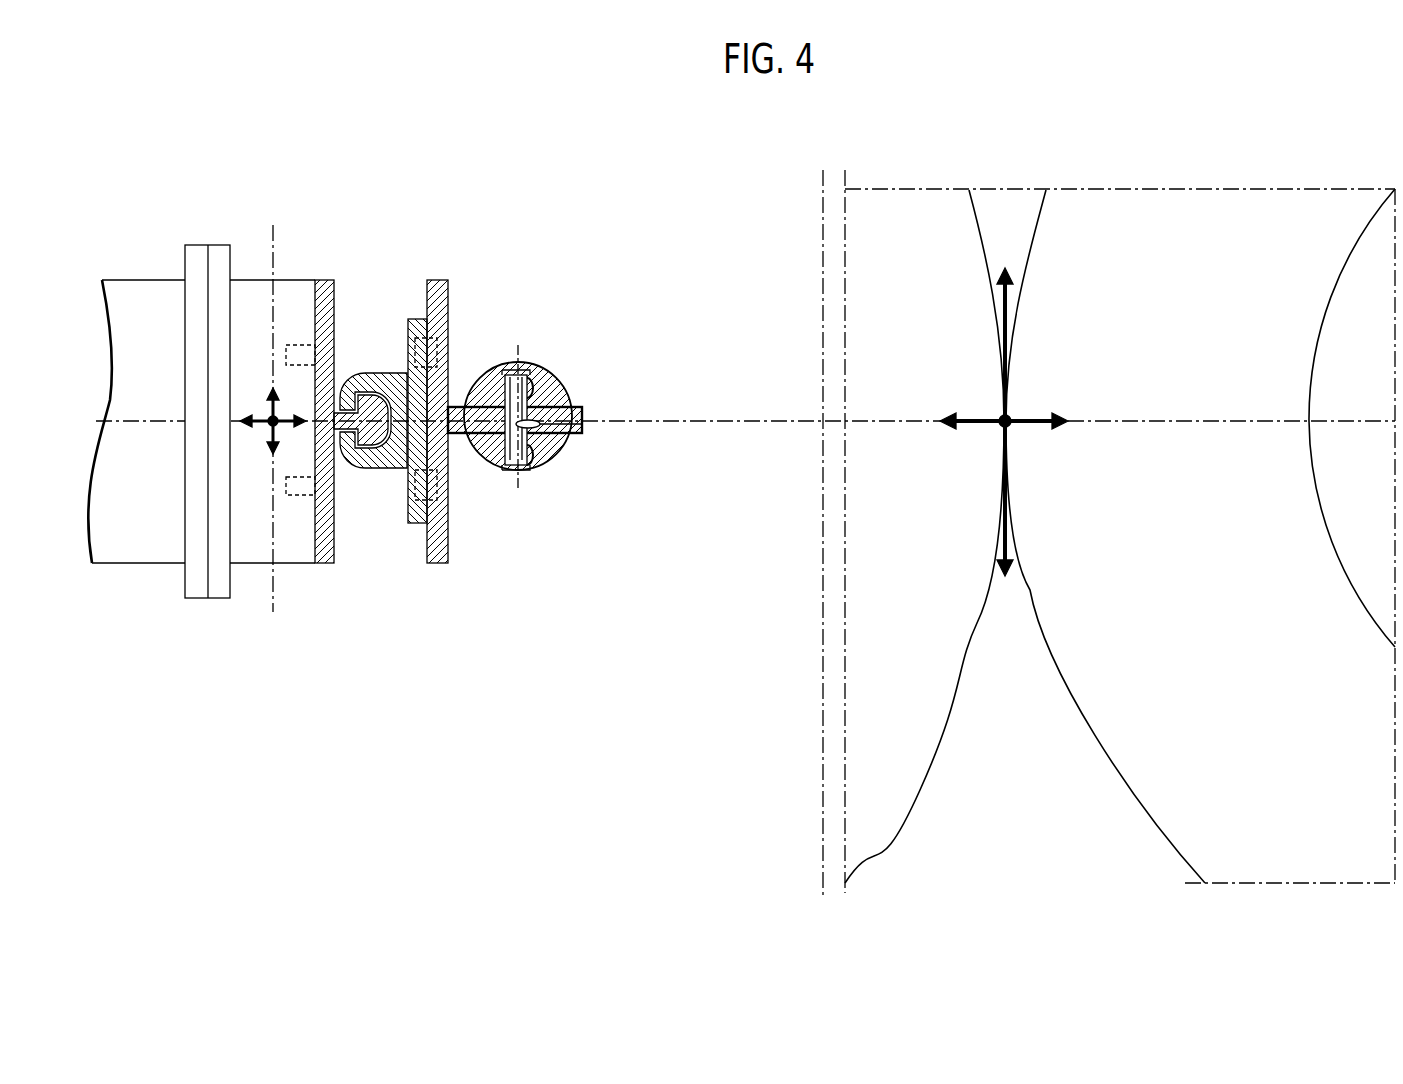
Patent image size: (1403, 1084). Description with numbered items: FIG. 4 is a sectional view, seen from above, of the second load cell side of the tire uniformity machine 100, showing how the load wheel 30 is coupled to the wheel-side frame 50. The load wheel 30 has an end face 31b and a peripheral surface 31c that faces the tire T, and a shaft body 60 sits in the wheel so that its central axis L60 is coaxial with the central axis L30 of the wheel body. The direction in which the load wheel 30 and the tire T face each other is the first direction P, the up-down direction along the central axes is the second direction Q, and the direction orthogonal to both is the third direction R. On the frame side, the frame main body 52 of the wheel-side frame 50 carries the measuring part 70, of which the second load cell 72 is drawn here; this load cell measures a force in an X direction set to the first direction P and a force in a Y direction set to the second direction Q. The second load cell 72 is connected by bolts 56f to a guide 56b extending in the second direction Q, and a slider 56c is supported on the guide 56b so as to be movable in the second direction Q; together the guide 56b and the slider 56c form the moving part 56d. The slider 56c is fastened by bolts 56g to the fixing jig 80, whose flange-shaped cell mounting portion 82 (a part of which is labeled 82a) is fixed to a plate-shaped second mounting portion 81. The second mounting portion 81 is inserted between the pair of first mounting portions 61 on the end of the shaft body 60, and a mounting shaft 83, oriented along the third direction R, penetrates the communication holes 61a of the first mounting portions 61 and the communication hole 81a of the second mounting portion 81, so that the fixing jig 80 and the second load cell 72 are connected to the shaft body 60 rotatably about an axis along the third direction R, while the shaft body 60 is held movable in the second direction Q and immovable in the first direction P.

The optical device 100 is at (696, 166).
The wheel-side frame 50 is at (137, 287).
The frame main body 52 is at (168, 287).
The second load cell 72 is at (250, 298).
The measuring part 70 is at (265, 429).
The moving part 56d is at (468, 192).
The guide 56b is at (334, 327).
The slider 56c is at (388, 373).
The bolts 56f is at (342, 492).
The bolts 56g is at (447, 492).
The cell mounting portion 82 is at (447, 545).
The engaging portion 82a is at (435, 507).
The fixing jig 80 is at (497, 445).
The mounting shaft 83 is at (513, 447).
The second mounting portion 81 is at (585, 412).
The communication hole 81a is at (555, 422).
The shaft body 60 is at (537, 468).
The first mounting portions 61 is at (570, 388).
The communication holes 61a is at (523, 373).
The load wheel 30 is at (1109, 557).
The end face 31b is at (925, 259).
The peripheral surface 31c is at (982, 613).
The central axis L30 is at (493, 390).
The central axis L60 is at (745, 344).
The X direction X is at (258, 405).
The Y direction Y is at (258, 437).
The first direction P is at (1018, 416).
The second direction Q is at (1006, 514).
The third direction R is at (1001, 423).
The tire T is at (1185, 828).